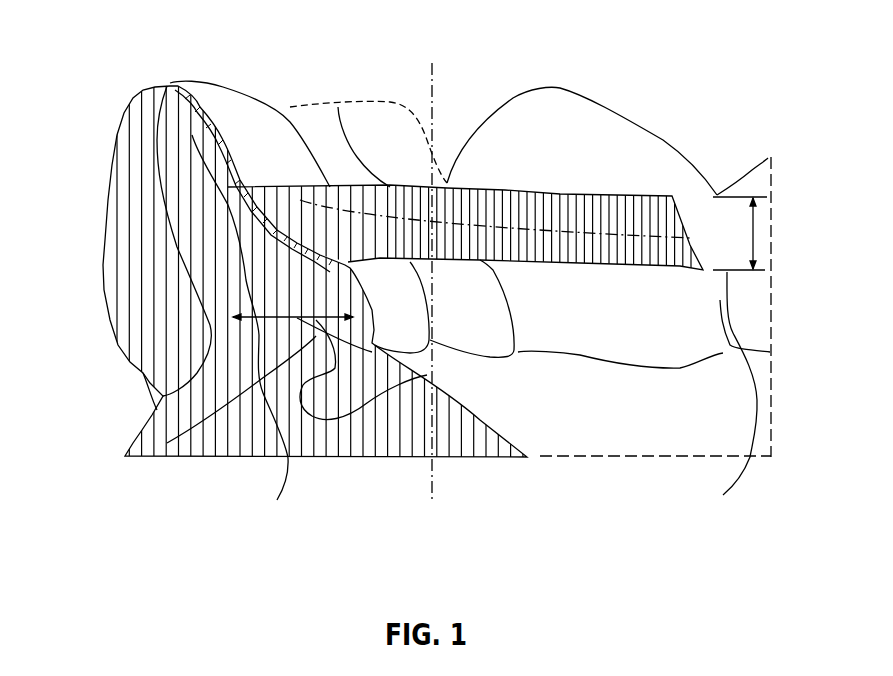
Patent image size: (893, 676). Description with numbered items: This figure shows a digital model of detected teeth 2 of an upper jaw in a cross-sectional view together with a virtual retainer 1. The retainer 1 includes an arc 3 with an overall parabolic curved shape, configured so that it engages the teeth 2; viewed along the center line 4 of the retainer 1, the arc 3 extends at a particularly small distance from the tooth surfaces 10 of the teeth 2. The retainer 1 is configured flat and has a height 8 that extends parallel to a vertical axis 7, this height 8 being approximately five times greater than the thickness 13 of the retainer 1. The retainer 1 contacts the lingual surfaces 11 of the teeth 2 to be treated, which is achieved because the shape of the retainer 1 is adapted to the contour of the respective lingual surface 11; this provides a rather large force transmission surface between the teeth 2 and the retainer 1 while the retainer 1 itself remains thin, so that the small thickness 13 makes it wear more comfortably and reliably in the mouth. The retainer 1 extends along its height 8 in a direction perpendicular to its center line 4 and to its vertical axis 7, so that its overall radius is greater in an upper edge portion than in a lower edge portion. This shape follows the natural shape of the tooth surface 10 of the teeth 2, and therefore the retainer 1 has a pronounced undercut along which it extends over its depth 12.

The retainer 1 is at (506, 185).
The teeth 2 is at (573, 130).
The arc 3 is at (392, 112).
The center line 4 is at (338, 107).
The vertical axis 7 is at (430, 427).
The height 8 is at (737, 394).
The tooth surfaces 10 is at (113, 155).
The lingual surfaces 11 is at (637, 147).
The depth 12 is at (272, 331).
The thickness 13 is at (183, 167).